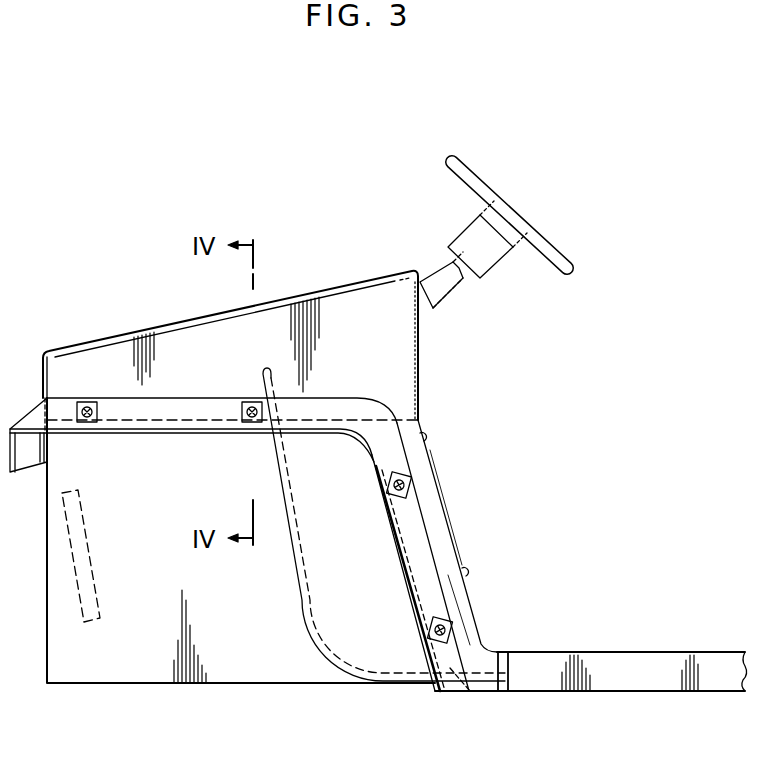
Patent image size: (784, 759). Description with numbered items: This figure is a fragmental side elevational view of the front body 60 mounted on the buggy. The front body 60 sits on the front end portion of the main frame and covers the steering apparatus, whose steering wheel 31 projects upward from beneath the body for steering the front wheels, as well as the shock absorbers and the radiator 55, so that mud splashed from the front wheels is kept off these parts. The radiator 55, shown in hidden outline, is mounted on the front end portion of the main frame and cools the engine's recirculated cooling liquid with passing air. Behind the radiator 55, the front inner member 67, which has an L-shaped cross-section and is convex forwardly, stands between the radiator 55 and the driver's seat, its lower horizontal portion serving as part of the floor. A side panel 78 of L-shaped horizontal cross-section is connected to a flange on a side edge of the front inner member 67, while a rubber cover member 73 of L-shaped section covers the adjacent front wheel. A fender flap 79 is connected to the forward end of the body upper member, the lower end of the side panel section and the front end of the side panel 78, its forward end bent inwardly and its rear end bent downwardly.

The steering wheel 31 is at (552, 248).
The radiator 55 is at (97, 607).
The front body 60 is at (164, 325).
The front inner member 67 is at (303, 618).
The cover member 73 is at (180, 683).
The side panel 78 is at (447, 523).
The fender flap 79 is at (153, 437).